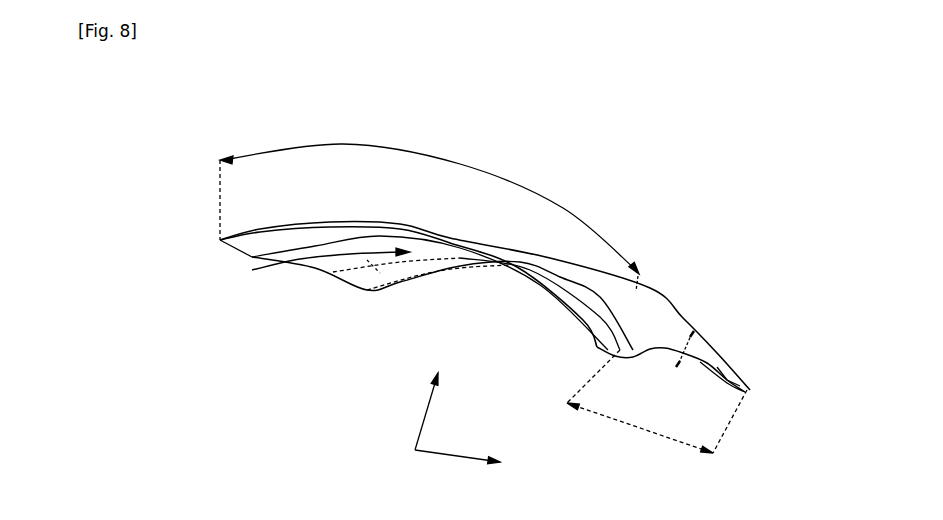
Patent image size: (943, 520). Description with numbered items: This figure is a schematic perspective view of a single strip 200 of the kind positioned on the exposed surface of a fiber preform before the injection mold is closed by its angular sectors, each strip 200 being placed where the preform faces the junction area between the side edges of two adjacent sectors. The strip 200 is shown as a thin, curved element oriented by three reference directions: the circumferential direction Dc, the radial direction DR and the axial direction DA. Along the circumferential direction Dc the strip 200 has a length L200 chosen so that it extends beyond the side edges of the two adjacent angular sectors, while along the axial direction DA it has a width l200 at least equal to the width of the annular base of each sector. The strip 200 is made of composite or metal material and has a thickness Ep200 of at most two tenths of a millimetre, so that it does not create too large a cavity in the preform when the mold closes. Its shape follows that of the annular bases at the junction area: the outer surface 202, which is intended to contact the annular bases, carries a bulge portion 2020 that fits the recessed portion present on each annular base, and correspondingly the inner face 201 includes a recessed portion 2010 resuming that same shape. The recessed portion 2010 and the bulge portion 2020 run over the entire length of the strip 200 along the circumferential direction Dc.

The strip 200 is at (485, 251).
The recessed portion 2010 is at (421, 298).
The bulge portion 2020 is at (699, 324).
The inner face 201 is at (713, 398).
The outer surface 202 is at (757, 362).
The length L200 is at (429, 201).
The thickness Ep200 is at (717, 328).
The width l200 is at (657, 412).
The circumferential direction Dc is at (331, 280).
The radial direction DR is at (435, 399).
The axial direction DA is at (476, 464).